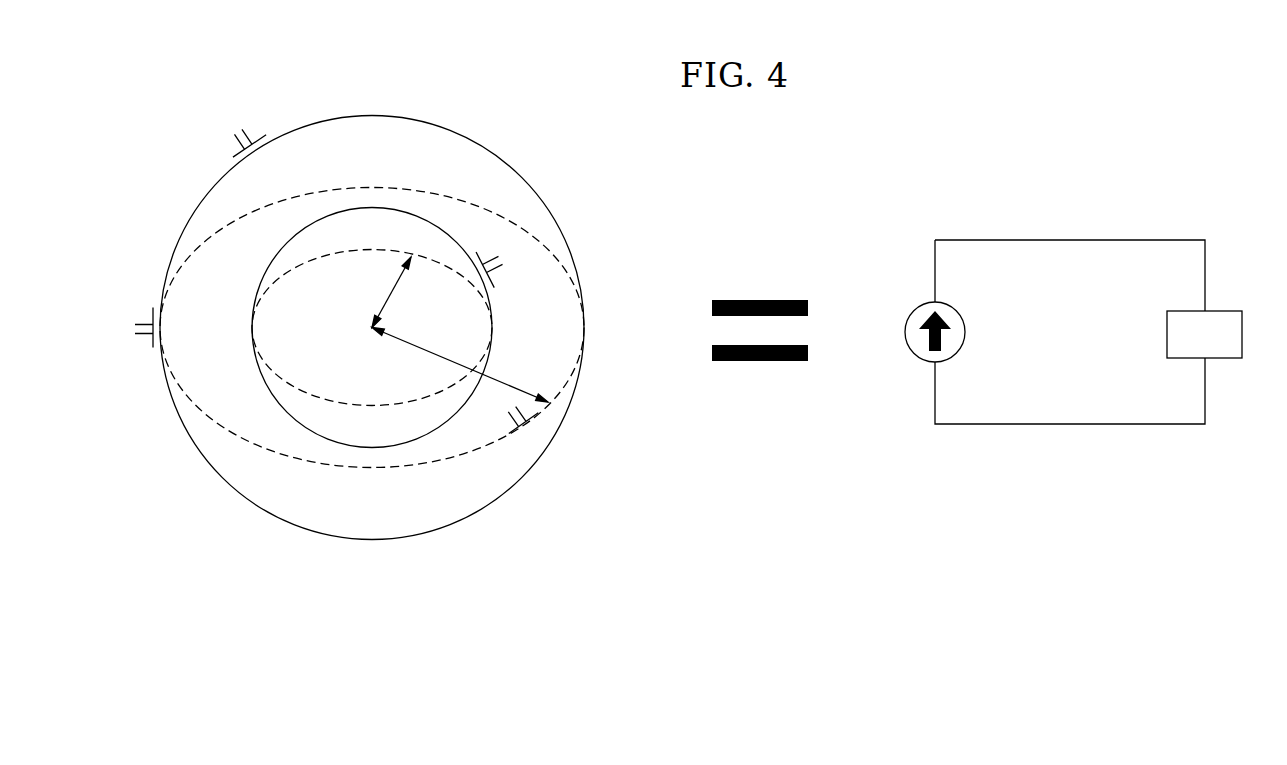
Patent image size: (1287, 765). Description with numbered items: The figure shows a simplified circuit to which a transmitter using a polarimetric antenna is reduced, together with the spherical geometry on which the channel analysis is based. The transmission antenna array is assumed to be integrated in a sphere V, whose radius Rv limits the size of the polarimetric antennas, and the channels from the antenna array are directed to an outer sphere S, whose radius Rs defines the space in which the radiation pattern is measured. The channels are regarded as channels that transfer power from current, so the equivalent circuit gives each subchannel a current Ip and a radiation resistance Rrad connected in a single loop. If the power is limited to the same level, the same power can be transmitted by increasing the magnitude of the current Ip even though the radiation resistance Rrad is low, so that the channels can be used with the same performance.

The outer sphere S is at (359, 328).
The sphere V is at (381, 328).
The radius of the sphere V Rv is at (384, 292).
The radius of the sphere S Rs is at (460, 365).
The current Ip is at (920, 332).
The radiation resistance Rrad is at (1204, 334).